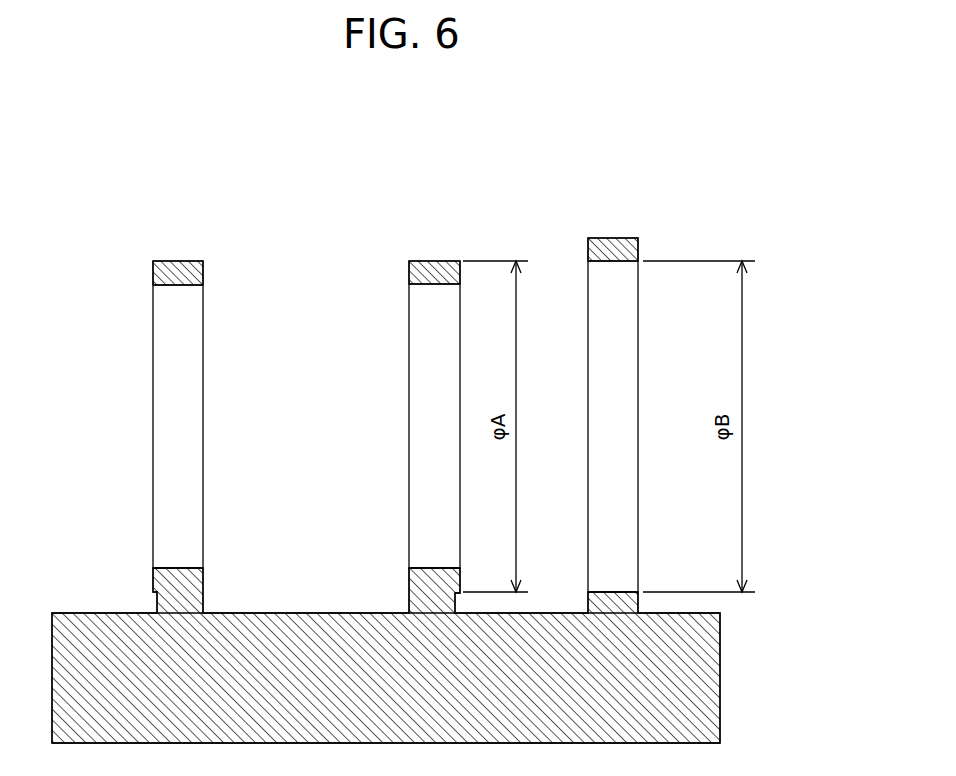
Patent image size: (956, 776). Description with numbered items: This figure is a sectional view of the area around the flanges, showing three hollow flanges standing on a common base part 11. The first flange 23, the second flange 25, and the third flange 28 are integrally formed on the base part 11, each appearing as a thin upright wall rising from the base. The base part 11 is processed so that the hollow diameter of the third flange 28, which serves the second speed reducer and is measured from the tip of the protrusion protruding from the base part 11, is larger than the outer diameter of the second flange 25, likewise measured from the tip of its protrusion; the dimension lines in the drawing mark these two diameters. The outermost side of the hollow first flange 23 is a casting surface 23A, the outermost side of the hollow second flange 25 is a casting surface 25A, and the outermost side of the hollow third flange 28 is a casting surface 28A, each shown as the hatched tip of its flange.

The base part 11 is at (708, 685).
The first flange 23 is at (190, 366).
The casting surface 23A is at (182, 268).
The second flange 25 is at (399, 366).
The casting surface 25A is at (440, 268).
The third flange 28 is at (652, 366).
The casting surface 28A is at (622, 246).